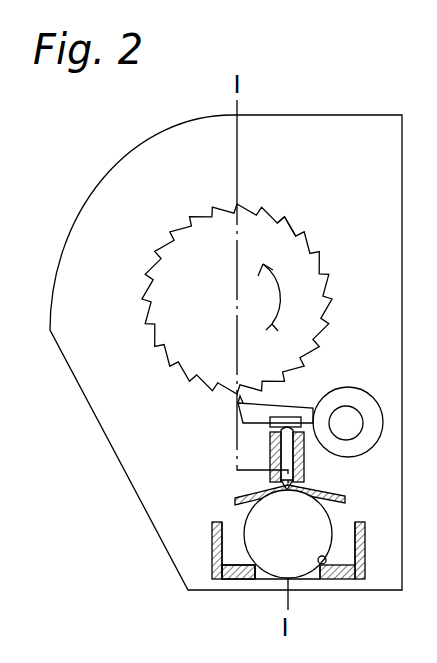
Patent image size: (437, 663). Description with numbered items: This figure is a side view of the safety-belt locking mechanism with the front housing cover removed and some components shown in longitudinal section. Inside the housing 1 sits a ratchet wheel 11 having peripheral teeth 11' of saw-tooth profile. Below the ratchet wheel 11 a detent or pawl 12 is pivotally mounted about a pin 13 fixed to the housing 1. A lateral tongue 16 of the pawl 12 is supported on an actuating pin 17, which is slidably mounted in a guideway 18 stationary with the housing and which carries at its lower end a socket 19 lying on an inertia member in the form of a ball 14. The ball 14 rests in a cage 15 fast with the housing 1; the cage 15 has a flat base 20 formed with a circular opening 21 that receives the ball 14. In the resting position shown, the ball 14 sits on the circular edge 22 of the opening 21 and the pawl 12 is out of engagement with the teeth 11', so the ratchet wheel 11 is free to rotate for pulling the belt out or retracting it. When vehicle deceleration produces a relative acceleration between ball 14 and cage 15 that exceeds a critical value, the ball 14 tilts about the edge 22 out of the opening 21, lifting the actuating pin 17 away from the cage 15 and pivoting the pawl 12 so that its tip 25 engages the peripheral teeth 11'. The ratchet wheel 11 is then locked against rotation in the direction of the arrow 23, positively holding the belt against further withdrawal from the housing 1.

The housing 1 is at (68, 328).
The ratchet wheel 11 is at (229, 299).
The peripheral teeth 11' is at (312, 228).
The detent or pawl 12 is at (243, 410).
The pin 13 is at (362, 425).
The ball 14 is at (320, 540).
The cage 15 is at (228, 545).
The lateral tongue 16 is at (307, 412).
The actuating pin 17 is at (274, 455).
The guideway 18 is at (303, 458).
The socket 19 is at (247, 497).
The flat base 20 is at (228, 572).
The circular opening 21 is at (258, 576).
The circular edge 22 is at (323, 564).
The arrow 23 is at (275, 312).
The tip 25 is at (238, 396).